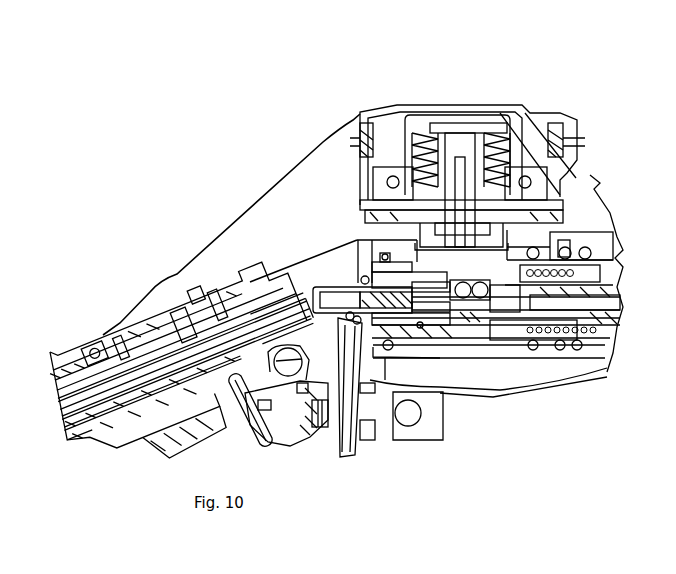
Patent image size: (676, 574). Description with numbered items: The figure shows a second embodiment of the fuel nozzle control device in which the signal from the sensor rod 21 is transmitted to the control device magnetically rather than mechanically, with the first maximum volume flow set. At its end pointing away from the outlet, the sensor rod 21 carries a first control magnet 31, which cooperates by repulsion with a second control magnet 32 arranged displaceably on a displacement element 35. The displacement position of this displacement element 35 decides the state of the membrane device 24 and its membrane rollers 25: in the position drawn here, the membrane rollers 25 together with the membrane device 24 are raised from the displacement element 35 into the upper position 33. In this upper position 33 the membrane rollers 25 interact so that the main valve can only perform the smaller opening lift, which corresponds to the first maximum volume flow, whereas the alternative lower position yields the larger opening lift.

The sensor rod 21 is at (123, 365).
The membrane device 24 is at (497, 113).
The membrane rollers 25 is at (547, 210).
The first control magnet 31 is at (300, 316).
The second control magnet 32 is at (397, 312).
The upper position 33 is at (355, 220).
The displacement element 35 is at (457, 322).